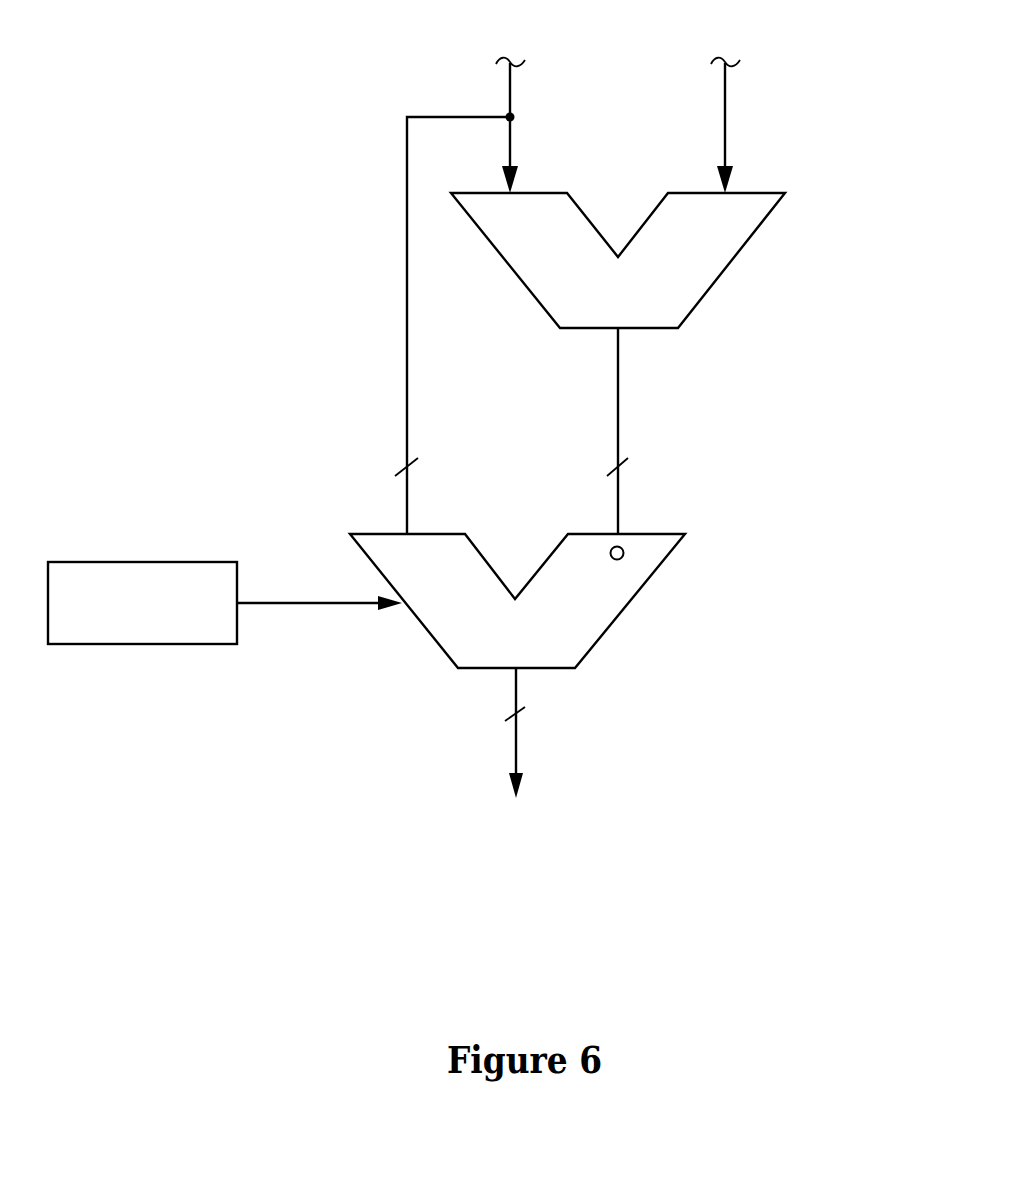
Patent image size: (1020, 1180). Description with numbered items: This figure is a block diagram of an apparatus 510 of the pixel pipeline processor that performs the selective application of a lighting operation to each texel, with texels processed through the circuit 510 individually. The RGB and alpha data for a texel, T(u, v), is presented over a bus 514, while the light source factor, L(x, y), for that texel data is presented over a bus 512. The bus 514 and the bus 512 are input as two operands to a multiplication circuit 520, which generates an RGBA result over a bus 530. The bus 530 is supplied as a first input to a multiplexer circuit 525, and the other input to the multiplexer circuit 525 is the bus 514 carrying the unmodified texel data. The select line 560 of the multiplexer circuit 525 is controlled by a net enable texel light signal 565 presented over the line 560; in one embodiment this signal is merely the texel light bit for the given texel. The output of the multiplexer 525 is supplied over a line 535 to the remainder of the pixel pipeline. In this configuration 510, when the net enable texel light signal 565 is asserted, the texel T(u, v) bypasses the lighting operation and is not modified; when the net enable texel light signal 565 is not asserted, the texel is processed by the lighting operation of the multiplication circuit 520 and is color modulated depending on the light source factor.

The apparatus 510 is at (218, 147).
The bus 512 is at (723, 100).
The bus 514 is at (437, 116).
The multiplication circuit 520 is at (722, 277).
The multiplexer circuit 525 is at (625, 608).
The bus 530 is at (618, 378).
The line 535 is at (516, 752).
The select line 560 is at (303, 603).
The net enable texel light signal 565 is at (145, 644).